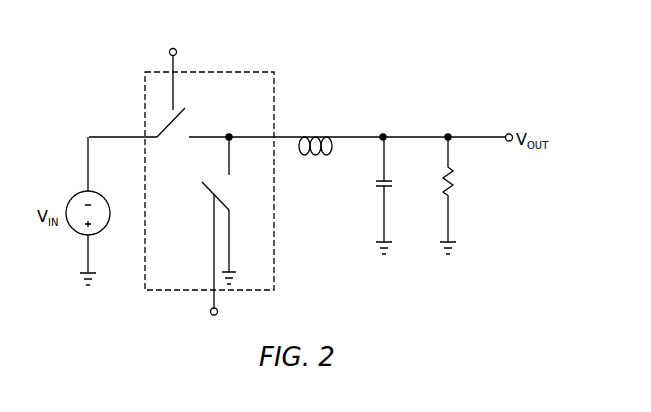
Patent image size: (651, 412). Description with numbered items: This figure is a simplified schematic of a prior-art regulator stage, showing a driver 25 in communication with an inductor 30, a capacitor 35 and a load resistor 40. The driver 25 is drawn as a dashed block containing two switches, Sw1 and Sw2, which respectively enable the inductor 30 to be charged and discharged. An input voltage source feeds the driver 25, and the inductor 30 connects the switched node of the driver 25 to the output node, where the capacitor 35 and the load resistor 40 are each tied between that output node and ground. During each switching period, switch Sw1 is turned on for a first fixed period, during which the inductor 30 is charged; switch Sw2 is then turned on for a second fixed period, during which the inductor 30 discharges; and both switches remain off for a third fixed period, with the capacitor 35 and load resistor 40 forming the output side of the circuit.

The driver 25 is at (227, 72).
The inductor 30 is at (314, 135).
The capacitor 35 is at (393, 185).
The load resistor 40 is at (455, 177).